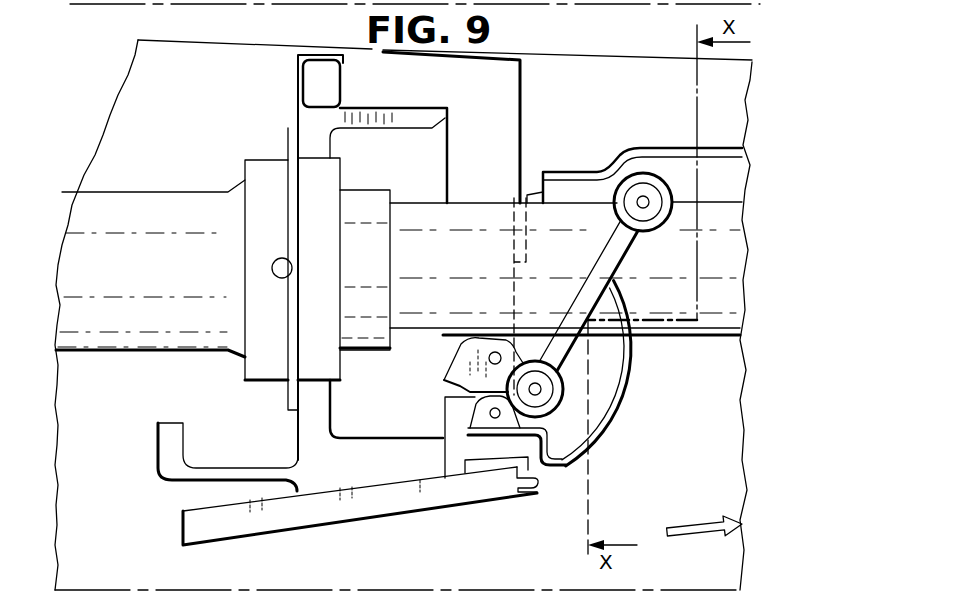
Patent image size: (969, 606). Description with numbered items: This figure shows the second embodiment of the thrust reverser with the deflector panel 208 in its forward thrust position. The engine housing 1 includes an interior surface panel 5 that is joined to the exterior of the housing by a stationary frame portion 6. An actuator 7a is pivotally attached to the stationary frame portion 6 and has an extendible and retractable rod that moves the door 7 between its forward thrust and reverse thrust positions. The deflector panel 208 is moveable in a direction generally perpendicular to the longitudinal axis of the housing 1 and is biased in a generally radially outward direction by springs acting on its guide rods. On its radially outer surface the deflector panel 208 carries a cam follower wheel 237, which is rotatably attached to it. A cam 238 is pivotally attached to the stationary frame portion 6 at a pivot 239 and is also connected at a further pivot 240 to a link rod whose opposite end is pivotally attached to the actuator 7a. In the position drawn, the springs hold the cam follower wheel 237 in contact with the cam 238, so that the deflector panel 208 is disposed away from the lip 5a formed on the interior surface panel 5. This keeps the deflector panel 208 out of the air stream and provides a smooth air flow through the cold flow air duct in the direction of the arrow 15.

The housing 1 is at (302, 38).
The interior surface panel 5 is at (300, 512).
The lip 5a is at (532, 498).
The stationary frame portion 6 is at (312, 122).
The door 7 is at (563, 90).
The actuator 7a is at (186, 205).
The arrow 15 is at (687, 527).
The deflector panel 208 is at (636, 362).
The cam follower wheel 237 is at (468, 426).
The cam 238 is at (444, 382).
The pivot 239 is at (460, 347).
The pivot 240 is at (545, 405).